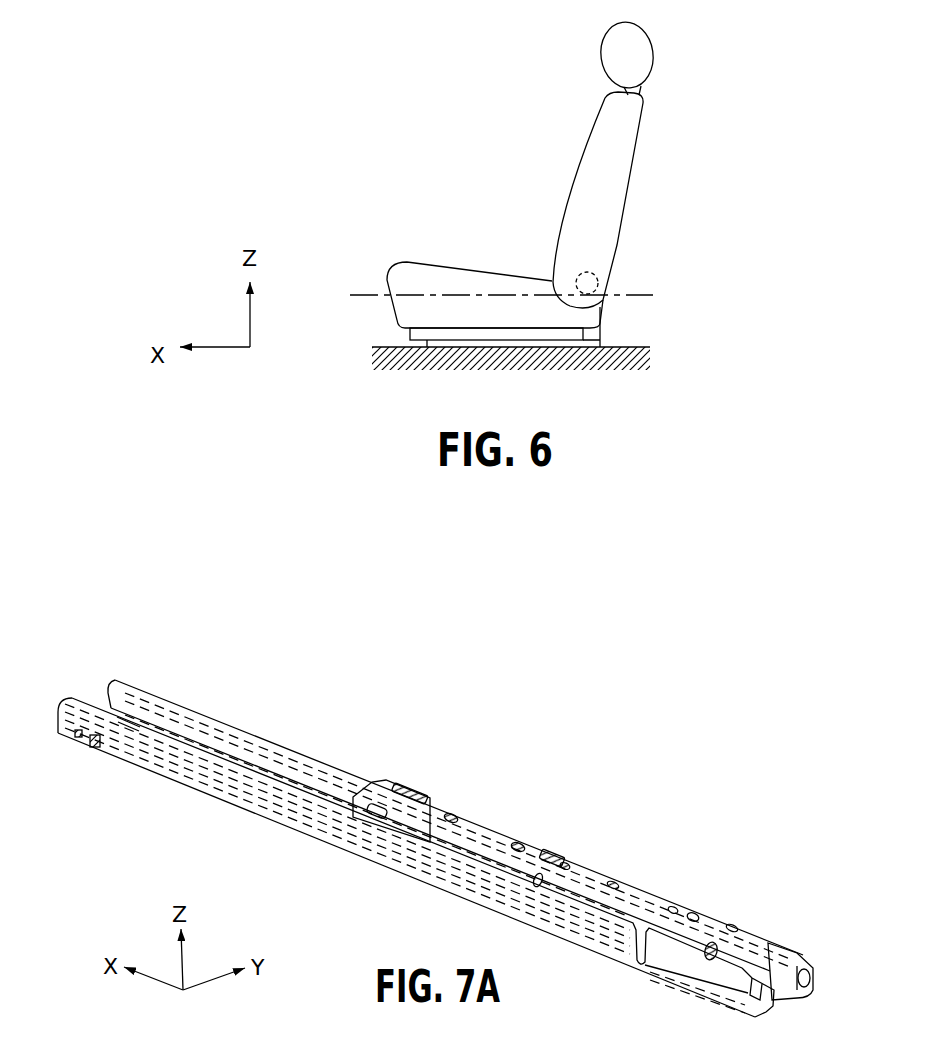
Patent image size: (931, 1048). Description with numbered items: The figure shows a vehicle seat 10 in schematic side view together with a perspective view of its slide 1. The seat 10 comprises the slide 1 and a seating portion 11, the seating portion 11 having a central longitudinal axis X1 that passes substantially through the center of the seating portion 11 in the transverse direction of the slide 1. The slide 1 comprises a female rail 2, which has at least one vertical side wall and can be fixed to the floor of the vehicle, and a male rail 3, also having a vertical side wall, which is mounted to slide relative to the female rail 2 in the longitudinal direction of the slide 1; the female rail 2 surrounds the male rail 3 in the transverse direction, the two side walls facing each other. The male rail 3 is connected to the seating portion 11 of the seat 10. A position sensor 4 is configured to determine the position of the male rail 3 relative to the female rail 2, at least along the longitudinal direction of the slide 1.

In FIG. 6, the slide 1 is at (511, 367).
In FIG. 7A, the slide 1 is at (435, 851).
In FIG. 6, the female rail 2 is at (622, 327).
In FIG. 7A, the female rail 2 is at (310, 823).
In FIG. 6, the male rail 3 is at (401, 337).
In FIG. 7A, the male rail 3 is at (497, 833).
In FIG. 7A, the position sensor 4 is at (705, 959).
In FIG. 6, the seat 10 is at (570, 119).
In FIG. 6, the seating portion 11 is at (473, 247).
In FIG. 6, the central longitudinal axis X1 is at (649, 292).